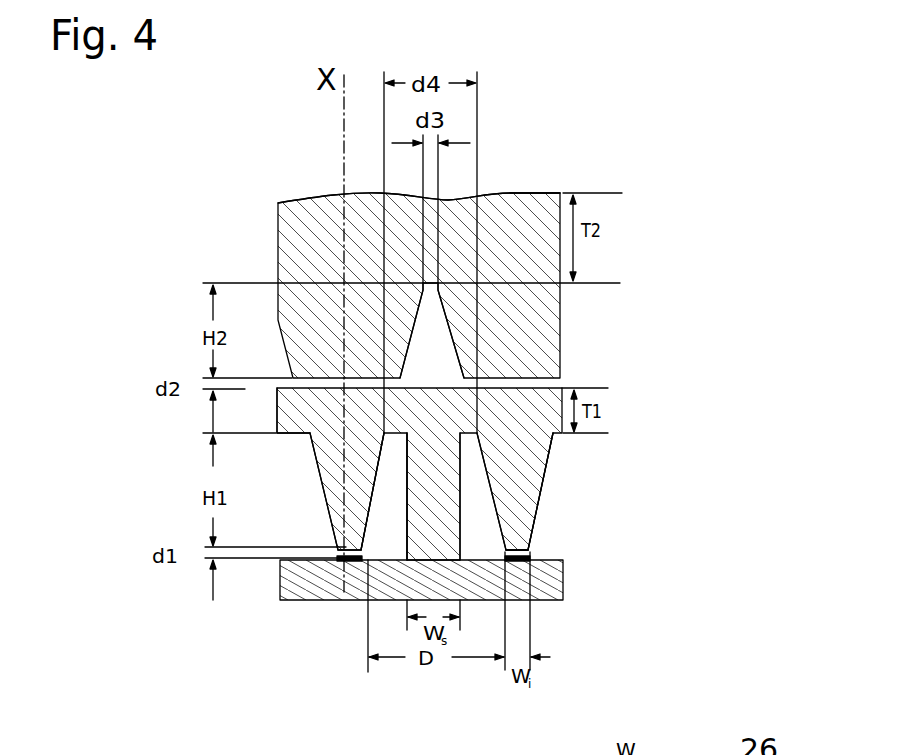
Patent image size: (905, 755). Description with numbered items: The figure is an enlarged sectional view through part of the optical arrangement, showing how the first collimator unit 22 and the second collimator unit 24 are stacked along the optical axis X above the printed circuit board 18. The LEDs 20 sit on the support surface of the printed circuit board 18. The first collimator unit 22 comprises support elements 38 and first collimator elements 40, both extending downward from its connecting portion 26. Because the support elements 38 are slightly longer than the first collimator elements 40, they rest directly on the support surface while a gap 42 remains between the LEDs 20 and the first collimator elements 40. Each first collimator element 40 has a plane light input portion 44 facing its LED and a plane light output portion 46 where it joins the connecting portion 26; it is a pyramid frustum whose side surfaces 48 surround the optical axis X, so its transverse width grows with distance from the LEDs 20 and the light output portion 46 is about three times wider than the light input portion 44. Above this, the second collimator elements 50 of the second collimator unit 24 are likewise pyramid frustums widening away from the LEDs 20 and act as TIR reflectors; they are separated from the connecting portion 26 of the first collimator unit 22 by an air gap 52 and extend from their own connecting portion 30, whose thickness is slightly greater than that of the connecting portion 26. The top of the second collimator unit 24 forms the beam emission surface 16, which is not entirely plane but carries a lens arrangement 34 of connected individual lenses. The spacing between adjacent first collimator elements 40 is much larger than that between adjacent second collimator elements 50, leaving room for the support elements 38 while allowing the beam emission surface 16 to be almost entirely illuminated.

The beam emission surface 16 is at (435, 128).
The printed circuit board 18 is at (557, 582).
The LEDs 20 is at (530, 557).
The first collimator unit 22 is at (444, 541).
The second collimator unit 24 is at (484, 285).
The connecting portion 26 is at (543, 410).
The connecting portion 30 is at (384, 285).
The lens arrangement 34 is at (547, 192).
The support elements 38 is at (445, 535).
The first collimator elements 40 is at (323, 478).
The gap 42 is at (362, 550).
The light input portion 44 is at (556, 521).
The light output portion 46 is at (537, 443).
The side surfaces 48 is at (285, 573).
The second collimator elements 50 is at (305, 307).
The air gap 52 is at (204, 413).